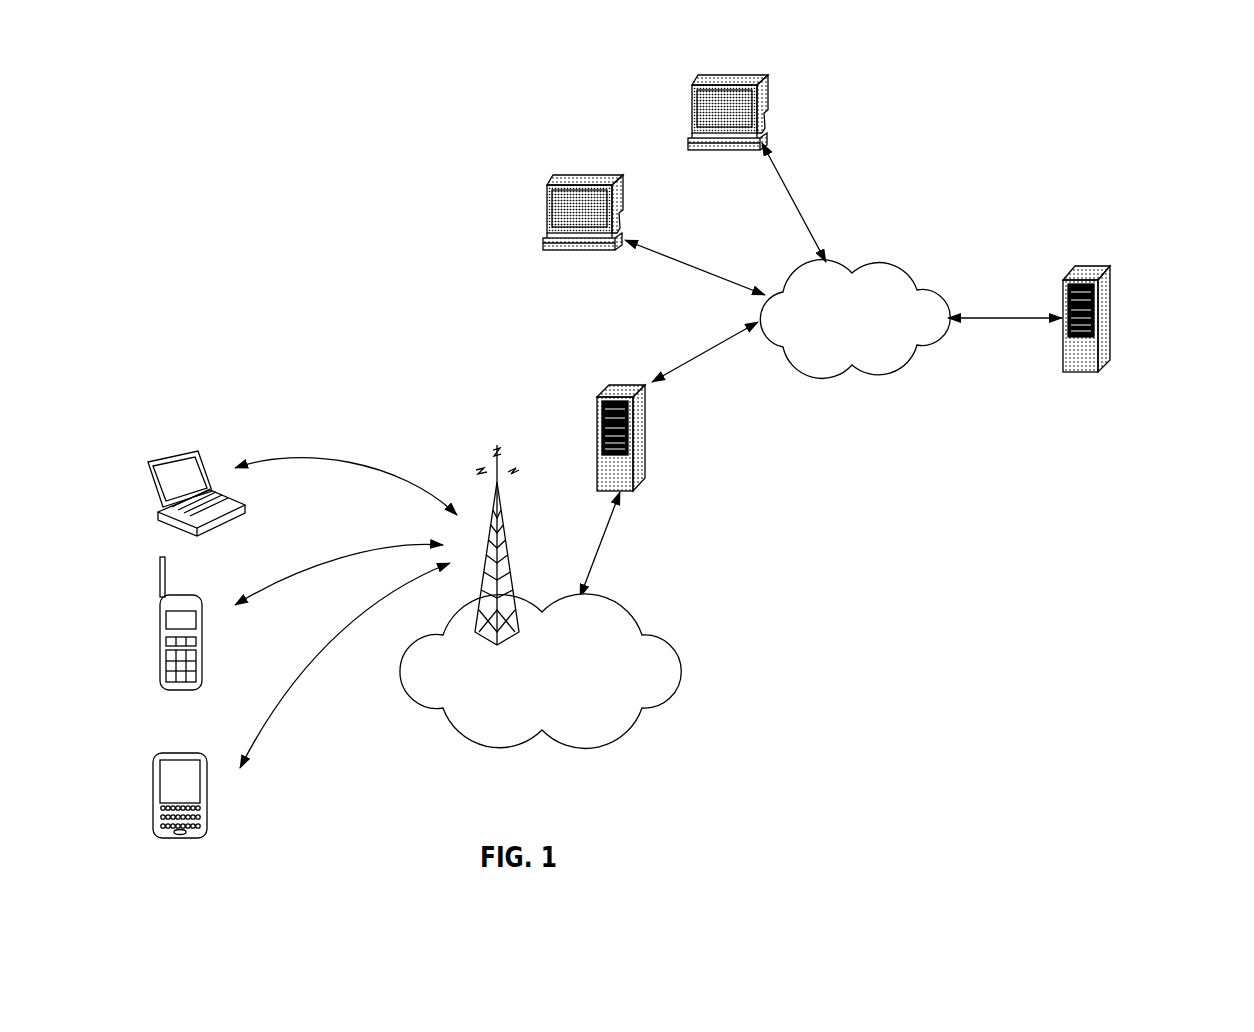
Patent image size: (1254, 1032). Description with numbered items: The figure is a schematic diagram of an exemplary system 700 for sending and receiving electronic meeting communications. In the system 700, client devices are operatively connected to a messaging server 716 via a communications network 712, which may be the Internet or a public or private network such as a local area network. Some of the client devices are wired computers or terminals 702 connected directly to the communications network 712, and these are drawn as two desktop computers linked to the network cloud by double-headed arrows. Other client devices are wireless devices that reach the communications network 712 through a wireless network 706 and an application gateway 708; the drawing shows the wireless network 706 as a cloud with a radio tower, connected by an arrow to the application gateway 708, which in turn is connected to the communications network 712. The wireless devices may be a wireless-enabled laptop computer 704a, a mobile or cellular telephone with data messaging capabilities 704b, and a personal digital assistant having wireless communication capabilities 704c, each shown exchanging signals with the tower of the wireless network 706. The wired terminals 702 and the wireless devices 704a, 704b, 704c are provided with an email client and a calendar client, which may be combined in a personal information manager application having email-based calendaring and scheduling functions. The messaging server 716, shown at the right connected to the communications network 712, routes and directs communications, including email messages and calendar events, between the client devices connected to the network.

The system 700 is at (1110, 178).
The wired computers or terminals 702 is at (759, 76).
The wireless-enabled laptop computer 704a is at (220, 515).
The mobile or cellular telephone with data messaging capabilities 704b is at (202, 643).
The personal digital assistant having wireless communication capabilities 704c is at (207, 800).
The wireless network 706 is at (676, 648).
The application gateway 708 is at (610, 385).
The communications network 712 is at (897, 267).
The messaging server 716 is at (1110, 265).